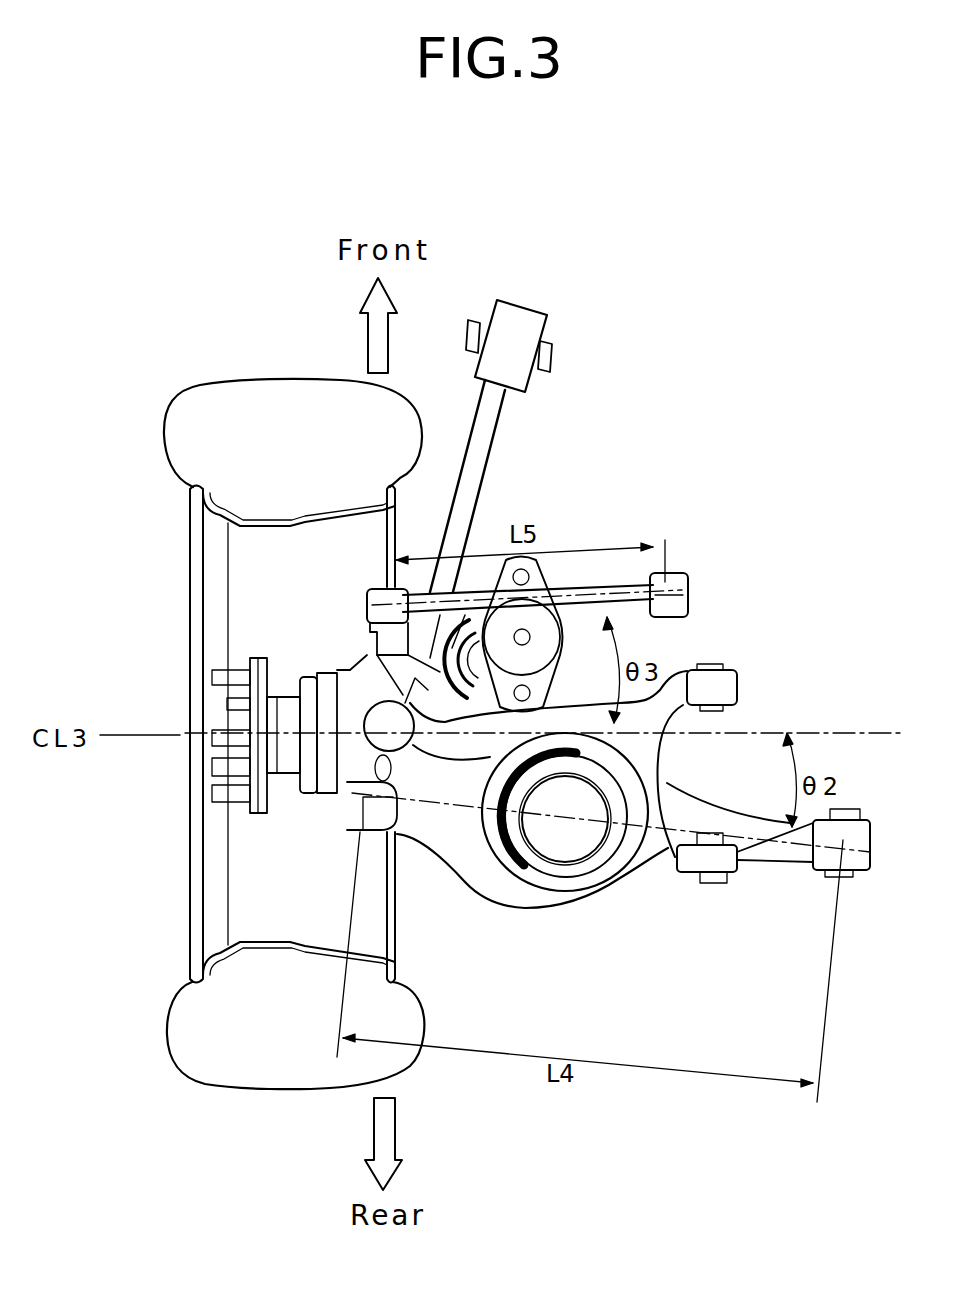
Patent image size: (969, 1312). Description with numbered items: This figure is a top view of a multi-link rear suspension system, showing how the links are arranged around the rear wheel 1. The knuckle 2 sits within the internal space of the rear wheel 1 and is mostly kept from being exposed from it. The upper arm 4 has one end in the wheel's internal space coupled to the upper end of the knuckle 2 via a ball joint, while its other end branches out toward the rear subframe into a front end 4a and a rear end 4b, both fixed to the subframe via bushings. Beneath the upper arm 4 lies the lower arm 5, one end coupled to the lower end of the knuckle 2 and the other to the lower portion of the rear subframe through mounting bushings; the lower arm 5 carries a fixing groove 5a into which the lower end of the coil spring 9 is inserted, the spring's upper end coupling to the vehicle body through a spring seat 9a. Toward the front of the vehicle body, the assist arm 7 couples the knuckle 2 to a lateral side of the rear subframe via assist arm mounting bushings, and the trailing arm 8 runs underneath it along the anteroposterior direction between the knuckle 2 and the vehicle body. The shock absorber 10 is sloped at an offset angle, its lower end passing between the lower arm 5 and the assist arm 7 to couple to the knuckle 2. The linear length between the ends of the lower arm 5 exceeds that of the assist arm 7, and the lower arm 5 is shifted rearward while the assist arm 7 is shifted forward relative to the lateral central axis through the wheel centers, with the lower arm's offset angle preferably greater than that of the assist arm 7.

The rear wheel 1 is at (190, 548).
The knuckle 2 is at (342, 763).
The upper arm 4 is at (577, 722).
The front end of upper arm 4a is at (717, 690).
The rear end of upper arm 4b is at (712, 865).
The lower arm 5 is at (570, 890).
The fixing groove 5a is at (497, 860).
The assist arm 7 is at (652, 625).
The trailing arm 8 is at (490, 437).
The coil spring 9 is at (508, 870).
The spring seat 9a is at (590, 870).
The shock absorber 10 is at (427, 688).